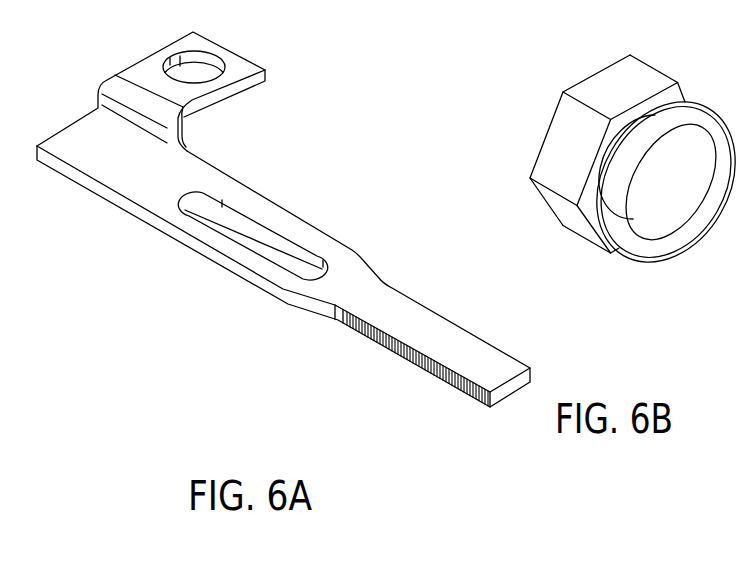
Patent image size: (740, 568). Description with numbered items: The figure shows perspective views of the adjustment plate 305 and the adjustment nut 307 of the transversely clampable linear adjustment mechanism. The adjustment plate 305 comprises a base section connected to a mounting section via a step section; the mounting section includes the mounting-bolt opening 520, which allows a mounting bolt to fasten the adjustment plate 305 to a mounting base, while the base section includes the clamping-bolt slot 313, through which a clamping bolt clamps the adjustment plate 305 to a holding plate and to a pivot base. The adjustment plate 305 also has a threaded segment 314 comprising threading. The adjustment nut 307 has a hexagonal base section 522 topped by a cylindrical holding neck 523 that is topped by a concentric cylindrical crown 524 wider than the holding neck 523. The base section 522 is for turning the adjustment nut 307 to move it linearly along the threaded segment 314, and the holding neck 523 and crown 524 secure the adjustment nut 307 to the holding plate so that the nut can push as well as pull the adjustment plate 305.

In FIG. 6A, the adjustment plate 305 is at (283, 231).
In FIG. 6A, the clamping-bolt slot 313 is at (260, 243).
In FIG. 6A, the threaded segment 314 is at (467, 363).
In FIG. 6A, the mounting-bolt opening 520 is at (197, 72).
In FIG. 6B, the adjustment nut 307 is at (621, 212).
In FIG. 6B, the hexagonal base section 522 is at (577, 120).
In FIG. 6B, the cylindrical holding neck 523 is at (597, 180).
In FIG. 6B, the cylindrical crown 524 is at (642, 243).